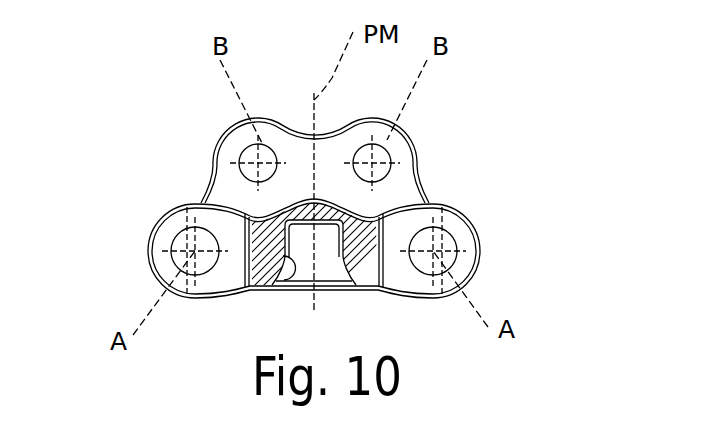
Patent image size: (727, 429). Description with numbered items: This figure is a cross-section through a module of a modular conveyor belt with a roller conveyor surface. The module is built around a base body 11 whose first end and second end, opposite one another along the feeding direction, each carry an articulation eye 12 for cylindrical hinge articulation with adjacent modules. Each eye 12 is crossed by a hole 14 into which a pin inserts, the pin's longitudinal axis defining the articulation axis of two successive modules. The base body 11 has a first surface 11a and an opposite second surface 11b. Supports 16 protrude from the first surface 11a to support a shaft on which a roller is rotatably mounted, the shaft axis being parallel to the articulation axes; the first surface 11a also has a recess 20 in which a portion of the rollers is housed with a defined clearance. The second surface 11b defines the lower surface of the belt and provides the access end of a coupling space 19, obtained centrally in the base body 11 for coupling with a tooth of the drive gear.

The base body 11 is at (552, 182).
The first surface 11a is at (201, 203).
The second surface 11b is at (378, 298).
The articulation eye 12 is at (160, 263).
The hole 14 is at (173, 237).
The support 16 is at (300, 140).
The coupling space 19 is at (297, 275).
The recess 20 is at (253, 210).